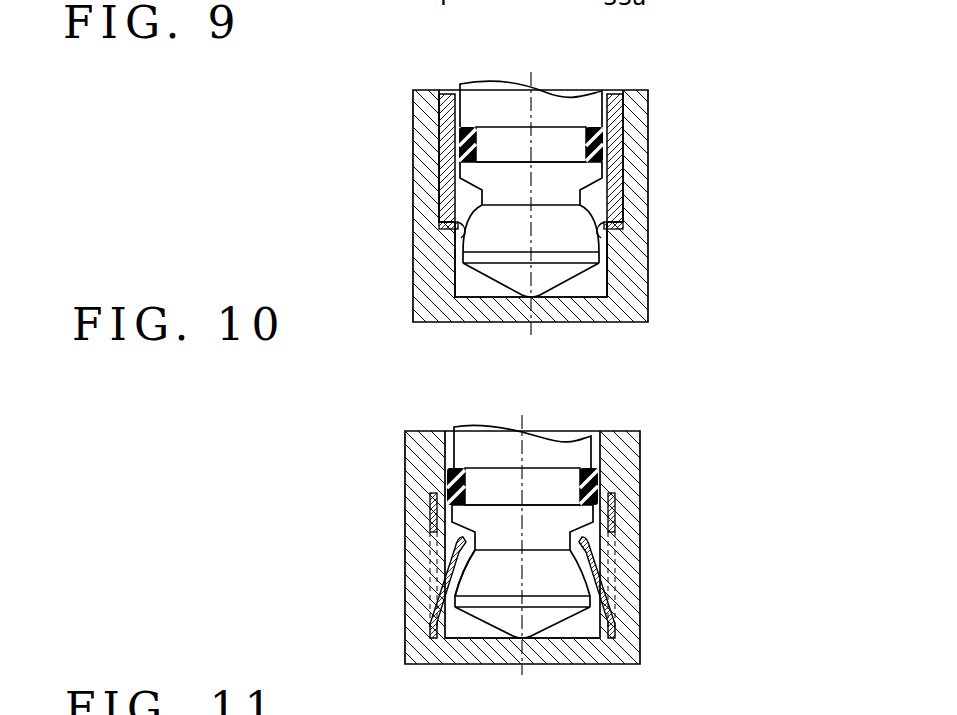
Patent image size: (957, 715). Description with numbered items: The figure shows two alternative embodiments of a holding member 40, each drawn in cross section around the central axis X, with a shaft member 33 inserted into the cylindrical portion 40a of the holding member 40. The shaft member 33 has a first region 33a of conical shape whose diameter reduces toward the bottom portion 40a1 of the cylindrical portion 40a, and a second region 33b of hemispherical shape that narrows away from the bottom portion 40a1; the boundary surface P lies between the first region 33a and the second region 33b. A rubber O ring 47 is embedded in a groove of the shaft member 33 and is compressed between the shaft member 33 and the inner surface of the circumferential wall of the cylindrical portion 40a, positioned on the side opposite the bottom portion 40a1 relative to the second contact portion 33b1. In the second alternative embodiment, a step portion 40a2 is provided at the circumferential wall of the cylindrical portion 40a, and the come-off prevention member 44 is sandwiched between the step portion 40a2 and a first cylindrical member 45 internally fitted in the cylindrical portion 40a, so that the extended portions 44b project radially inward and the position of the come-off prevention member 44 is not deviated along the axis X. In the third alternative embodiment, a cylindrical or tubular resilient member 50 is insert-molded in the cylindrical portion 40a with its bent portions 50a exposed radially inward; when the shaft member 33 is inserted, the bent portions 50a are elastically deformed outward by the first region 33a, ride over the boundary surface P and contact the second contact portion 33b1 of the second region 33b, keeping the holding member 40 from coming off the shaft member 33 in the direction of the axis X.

In FIG. 9, the shaft member 33 is at (497, 204).
In FIG. 10, the shaft member 33 is at (494, 543).
In FIG. 9, the first region 33a is at (568, 272).
In FIG. 10, the first region 33a is at (560, 618).
In FIG. 9, the second region 33b is at (482, 220).
In FIG. 10, the second region 33b is at (454, 564).
In FIG. 10, the second contact portion 33b1 is at (457, 560).
In FIG. 9, the holding member 40 is at (609, 206).
In FIG. 10, the holding member 40 is at (599, 572).
In FIG. 9, the cylindrical portion 40a is at (609, 206).
In FIG. 10, the cylindrical portion 40a is at (599, 572).
In FIG. 10, the bottom portion 40a1 is at (488, 655).
In FIG. 9, the step portion 40a2 is at (625, 199).
In FIG. 9, the come-off prevention member 44 is at (461, 257).
In FIG. 9, the extended portions 44b is at (457, 235).
In FIG. 9, the first cylindrical member 45 is at (619, 168).
In FIG. 9, the O ring 47 is at (460, 136).
In FIG. 10, the O ring 47 is at (445, 478).
In FIG. 10, the resilient member 50 is at (573, 565).
In FIG. 10, the bent portions 50a is at (585, 552).
In FIG. 9, the boundary surface P is at (500, 262).
In FIG. 10, the boundary surface P is at (490, 607).
In FIG. 9, the axis X is at (530, 191).
In FIG. 10, the axis X is at (521, 533).